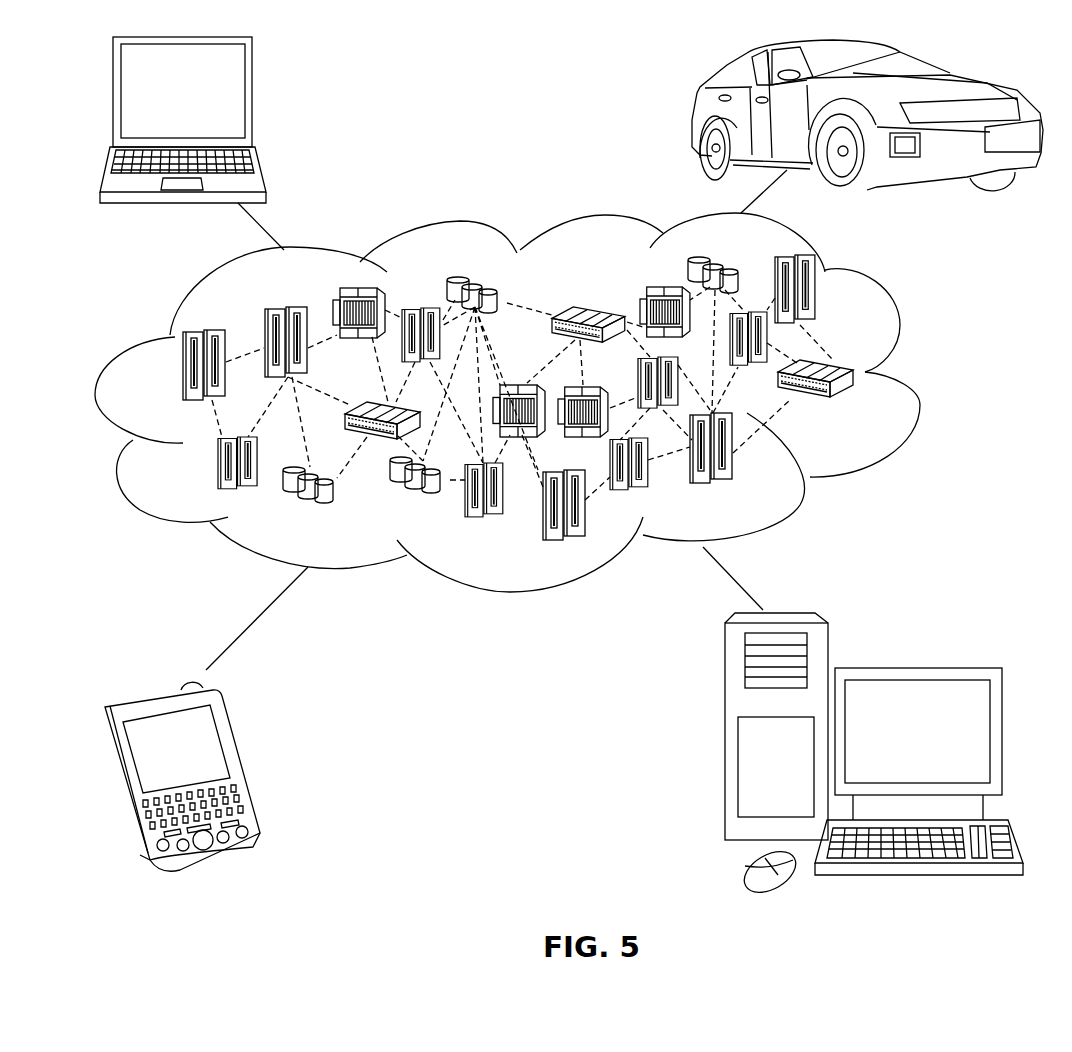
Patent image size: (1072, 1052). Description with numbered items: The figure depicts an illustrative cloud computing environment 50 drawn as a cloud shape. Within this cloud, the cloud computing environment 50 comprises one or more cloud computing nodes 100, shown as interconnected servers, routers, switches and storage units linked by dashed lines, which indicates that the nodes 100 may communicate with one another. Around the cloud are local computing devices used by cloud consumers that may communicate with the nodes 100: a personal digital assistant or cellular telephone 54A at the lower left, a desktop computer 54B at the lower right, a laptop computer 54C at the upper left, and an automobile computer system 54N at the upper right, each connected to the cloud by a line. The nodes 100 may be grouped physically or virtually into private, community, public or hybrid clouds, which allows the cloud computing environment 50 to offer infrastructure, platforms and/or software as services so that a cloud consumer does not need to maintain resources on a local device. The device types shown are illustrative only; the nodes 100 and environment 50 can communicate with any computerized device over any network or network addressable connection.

The cloud computing environment 50 is at (915, 380).
The cloud computing nodes 100 is at (857, 407).
The personal digital assistant or cellular telephone 54A is at (242, 760).
The desktop computer 54B is at (915, 667).
The laptop computer 54C is at (253, 101).
The automobile computer system 54N is at (695, 117).